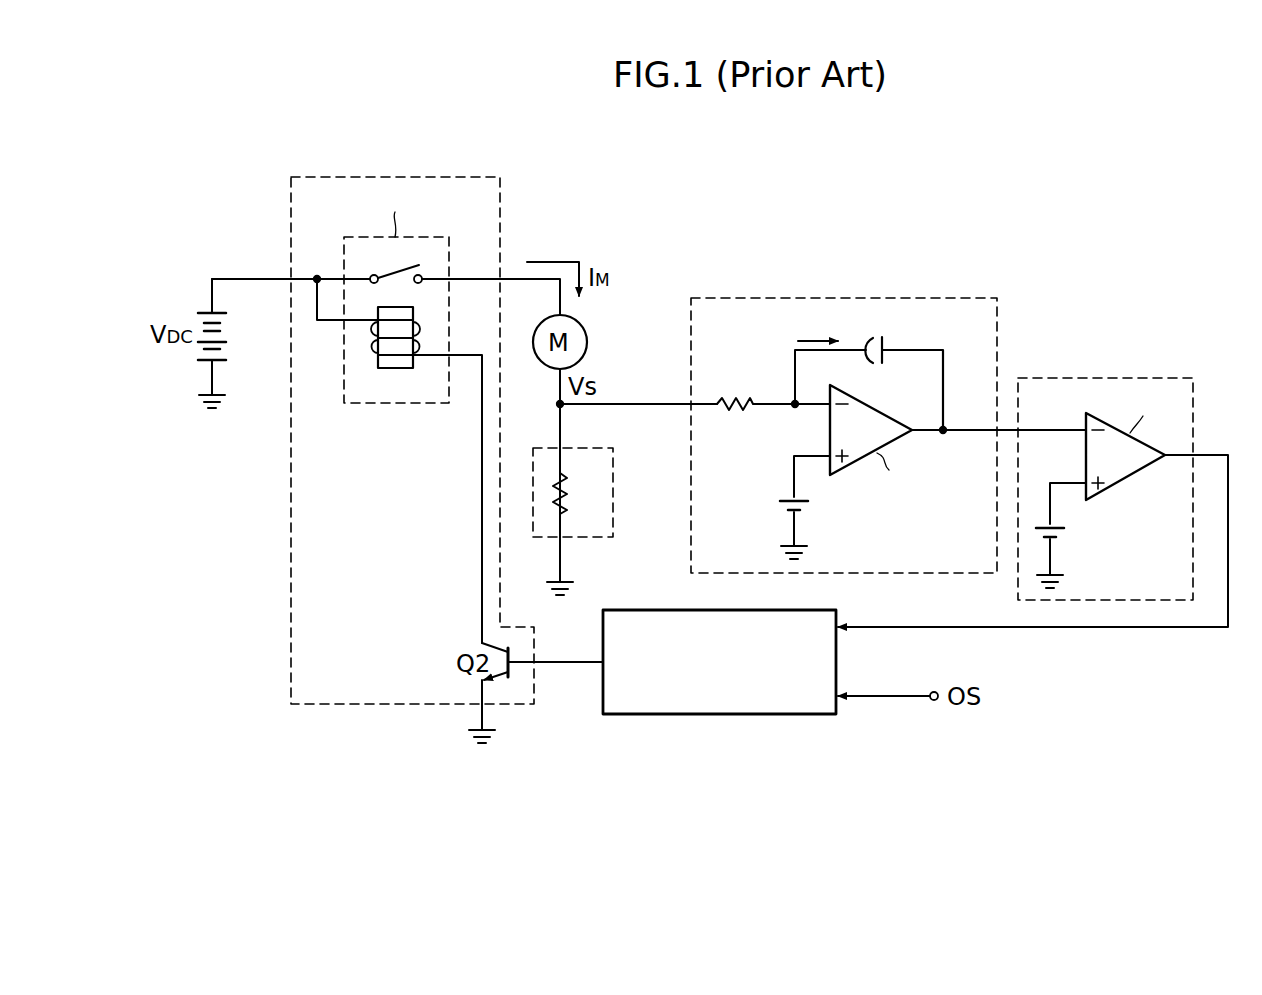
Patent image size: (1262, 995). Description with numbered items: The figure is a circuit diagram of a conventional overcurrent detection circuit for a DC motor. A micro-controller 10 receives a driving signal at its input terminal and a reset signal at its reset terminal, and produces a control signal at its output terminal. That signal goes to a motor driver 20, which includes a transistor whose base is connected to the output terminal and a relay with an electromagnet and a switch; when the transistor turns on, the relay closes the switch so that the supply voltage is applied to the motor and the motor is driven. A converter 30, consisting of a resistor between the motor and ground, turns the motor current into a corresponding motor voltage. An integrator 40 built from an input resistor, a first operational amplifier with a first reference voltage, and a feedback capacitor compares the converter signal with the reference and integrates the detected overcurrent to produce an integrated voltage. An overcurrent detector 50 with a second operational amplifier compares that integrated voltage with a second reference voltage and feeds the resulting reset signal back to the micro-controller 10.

The micro-controller 10 is at (715, 714).
The motor driver 20 is at (291, 219).
The converter 30 is at (613, 491).
The integrator 40 is at (848, 298).
The overcurrent detector 50 is at (1104, 378).